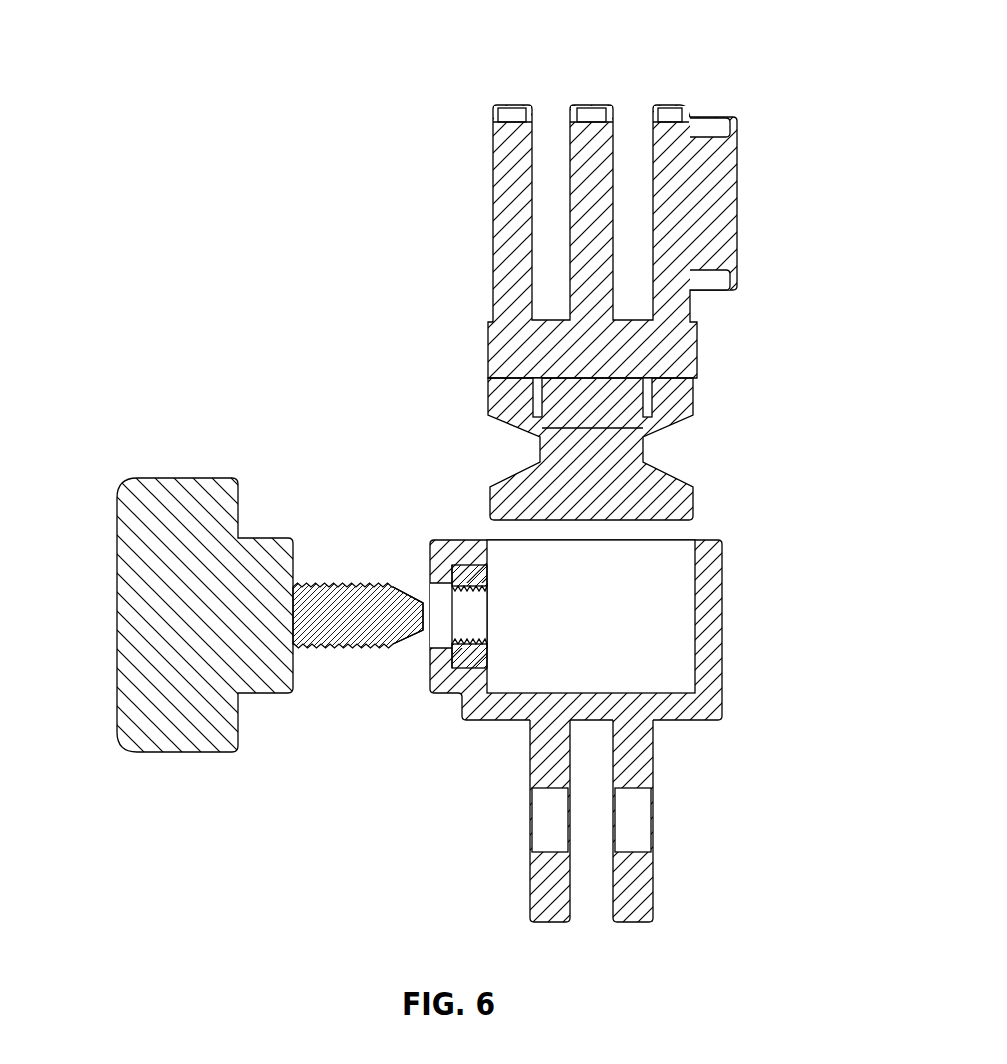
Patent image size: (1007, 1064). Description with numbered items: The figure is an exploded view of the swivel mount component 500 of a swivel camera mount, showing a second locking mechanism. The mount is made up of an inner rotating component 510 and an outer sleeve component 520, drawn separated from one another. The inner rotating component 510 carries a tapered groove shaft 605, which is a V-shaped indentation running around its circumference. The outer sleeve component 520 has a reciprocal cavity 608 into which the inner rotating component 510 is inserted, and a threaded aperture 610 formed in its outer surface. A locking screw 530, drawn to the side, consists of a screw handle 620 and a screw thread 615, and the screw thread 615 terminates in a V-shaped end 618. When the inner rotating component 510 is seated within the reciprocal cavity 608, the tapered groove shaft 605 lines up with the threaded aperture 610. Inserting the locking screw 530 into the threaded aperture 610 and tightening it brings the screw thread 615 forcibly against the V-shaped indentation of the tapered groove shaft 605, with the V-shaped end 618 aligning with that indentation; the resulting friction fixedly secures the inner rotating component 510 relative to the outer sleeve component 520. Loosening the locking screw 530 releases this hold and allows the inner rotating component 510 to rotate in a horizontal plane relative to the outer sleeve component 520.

The swivel mount component 500 is at (437, 478).
The inner rotating component 510 is at (637, 75).
The outer sleeve component 520 is at (683, 820).
The locking screw 530 is at (159, 622).
The tapered groove shaft 605 is at (656, 441).
The reciprocal cavity 608 is at (578, 599).
The threaded aperture 610 is at (457, 558).
The screw thread 615 is at (346, 608).
The V-shaped end 618 is at (413, 650).
The screw handle 620 is at (165, 627).